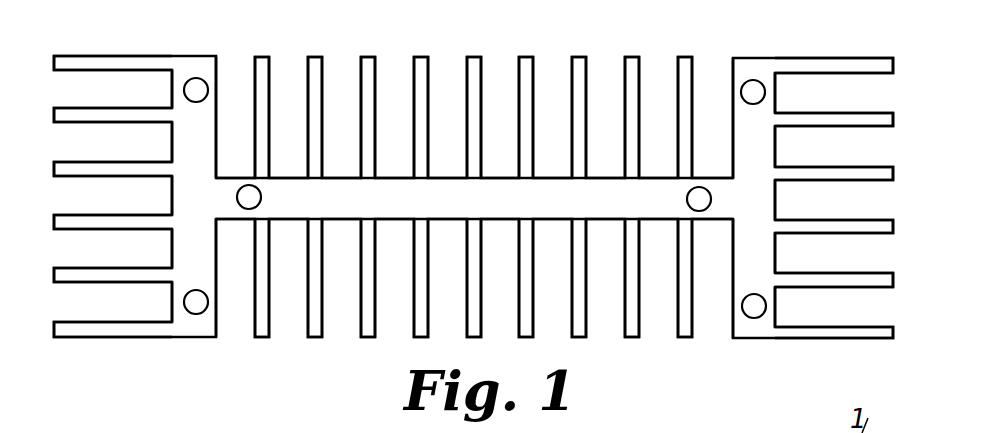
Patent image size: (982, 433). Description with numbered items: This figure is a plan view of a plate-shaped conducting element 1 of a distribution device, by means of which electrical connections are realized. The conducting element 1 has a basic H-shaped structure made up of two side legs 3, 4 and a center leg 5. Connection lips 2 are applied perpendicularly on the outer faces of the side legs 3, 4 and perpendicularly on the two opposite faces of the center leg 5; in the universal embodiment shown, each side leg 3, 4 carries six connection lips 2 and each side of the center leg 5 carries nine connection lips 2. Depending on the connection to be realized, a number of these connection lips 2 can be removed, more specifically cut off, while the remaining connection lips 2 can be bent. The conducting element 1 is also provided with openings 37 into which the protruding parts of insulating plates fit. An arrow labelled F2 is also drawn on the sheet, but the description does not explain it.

The conducting element 1 is at (471, 198).
The connection lips 2 is at (520, 62).
The side leg 3 is at (206, 262).
The side leg 4 is at (747, 250).
The center leg 5 is at (507, 200).
The openings 37 is at (198, 88).
The force direction F2 is at (586, 369).